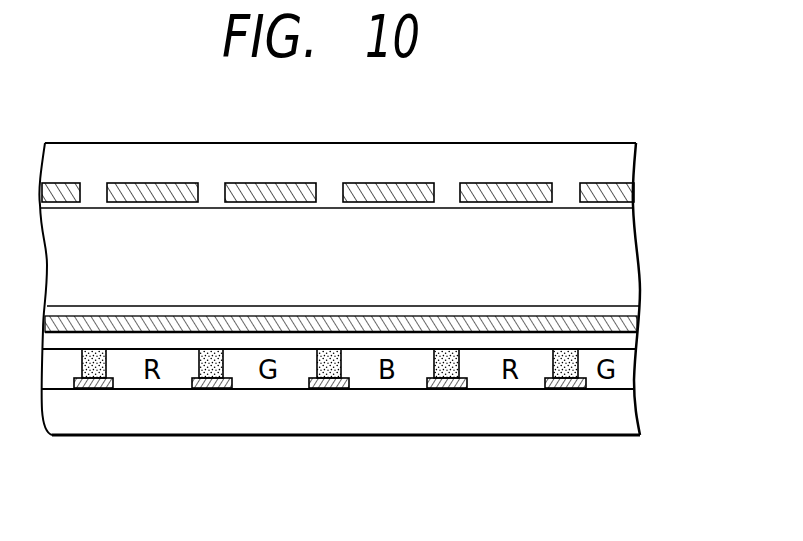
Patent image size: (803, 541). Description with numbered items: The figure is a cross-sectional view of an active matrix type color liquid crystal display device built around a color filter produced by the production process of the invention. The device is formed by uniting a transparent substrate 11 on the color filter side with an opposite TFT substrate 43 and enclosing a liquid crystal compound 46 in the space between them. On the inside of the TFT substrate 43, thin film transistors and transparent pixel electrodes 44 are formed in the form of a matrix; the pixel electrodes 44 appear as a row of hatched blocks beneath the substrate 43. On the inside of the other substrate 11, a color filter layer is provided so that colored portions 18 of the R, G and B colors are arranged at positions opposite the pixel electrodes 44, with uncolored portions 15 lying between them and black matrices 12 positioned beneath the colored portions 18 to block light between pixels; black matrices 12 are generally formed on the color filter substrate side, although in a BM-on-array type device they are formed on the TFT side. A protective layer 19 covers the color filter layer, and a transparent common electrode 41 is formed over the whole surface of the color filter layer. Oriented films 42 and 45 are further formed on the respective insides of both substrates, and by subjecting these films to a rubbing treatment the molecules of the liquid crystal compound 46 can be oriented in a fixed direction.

The transparent substrate 11 is at (627, 413).
The black matrices 12 is at (568, 389).
The uncolored portions 15 is at (434, 368).
The colored portions 18 is at (484, 384).
The protective layer 19 is at (628, 338).
The common electrode 41 is at (633, 321).
The oriented film 42 is at (630, 310).
The substrate 43 is at (513, 153).
The pixel electrodes 44 is at (398, 183).
The oriented film 45 is at (627, 202).
The liquid crystal compound 46 is at (623, 238).